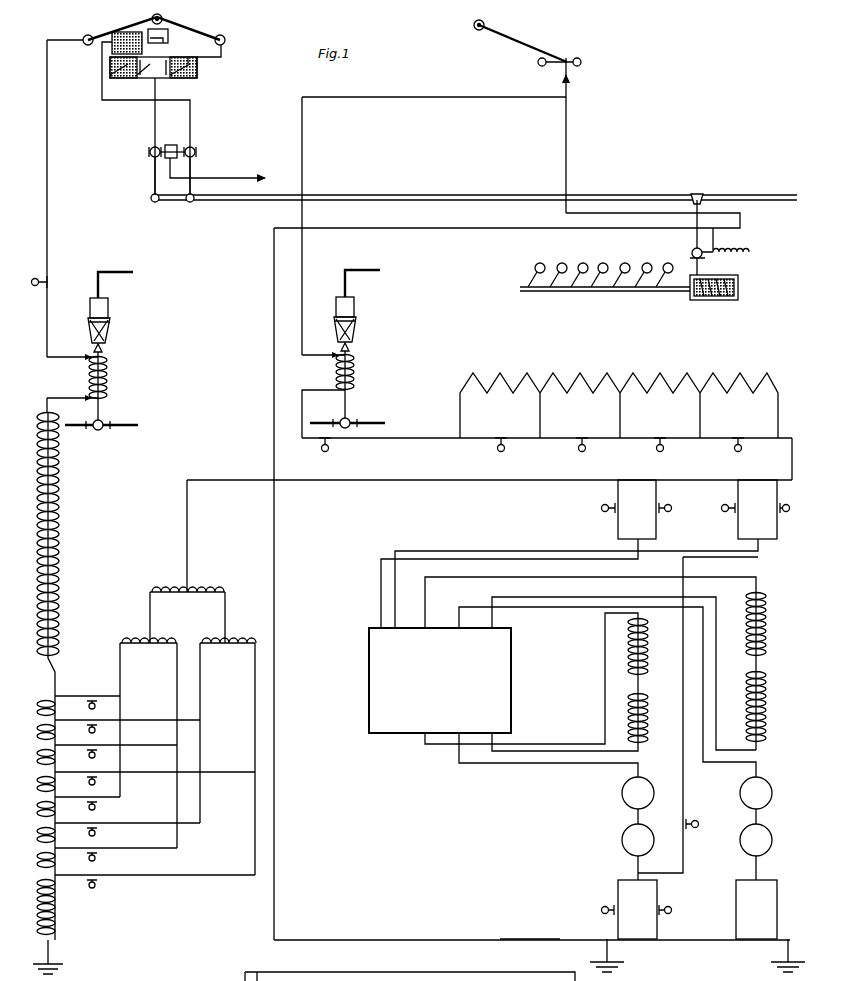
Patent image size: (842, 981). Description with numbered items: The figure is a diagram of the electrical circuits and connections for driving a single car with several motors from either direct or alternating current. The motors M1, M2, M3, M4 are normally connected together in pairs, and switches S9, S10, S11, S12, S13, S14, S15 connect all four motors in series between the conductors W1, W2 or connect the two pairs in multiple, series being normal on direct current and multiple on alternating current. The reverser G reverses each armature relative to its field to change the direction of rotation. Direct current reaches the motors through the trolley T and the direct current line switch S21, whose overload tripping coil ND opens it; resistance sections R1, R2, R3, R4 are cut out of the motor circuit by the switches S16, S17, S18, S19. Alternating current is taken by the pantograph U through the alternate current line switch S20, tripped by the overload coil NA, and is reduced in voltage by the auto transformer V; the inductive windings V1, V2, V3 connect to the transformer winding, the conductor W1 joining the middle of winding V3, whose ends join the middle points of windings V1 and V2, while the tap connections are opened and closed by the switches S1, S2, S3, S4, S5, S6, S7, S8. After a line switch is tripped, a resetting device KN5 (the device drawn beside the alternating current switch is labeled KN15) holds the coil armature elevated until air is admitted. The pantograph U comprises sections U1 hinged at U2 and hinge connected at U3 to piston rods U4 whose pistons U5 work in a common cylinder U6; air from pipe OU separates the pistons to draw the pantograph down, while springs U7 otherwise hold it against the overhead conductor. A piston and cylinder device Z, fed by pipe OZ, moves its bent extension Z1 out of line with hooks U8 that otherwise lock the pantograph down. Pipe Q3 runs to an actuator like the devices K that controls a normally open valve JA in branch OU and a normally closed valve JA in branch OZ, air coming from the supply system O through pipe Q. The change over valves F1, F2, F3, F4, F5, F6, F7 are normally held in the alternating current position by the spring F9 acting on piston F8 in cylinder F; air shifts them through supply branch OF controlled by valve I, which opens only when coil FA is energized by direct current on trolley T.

The auto transformer V is at (40, 490).
The inductive winding V1 is at (150, 648).
The inductive winding V2 is at (228, 648).
The inductive winding V3 is at (198, 588).
The tap switch S1 is at (155, 885).
The tap switch S2 is at (116, 858).
The tap switch S3 is at (127, 833).
The tap switch S4 is at (87, 807).
The tap switch S5 is at (155, 782).
The tap switch S6 is at (116, 755).
The tap switch S7 is at (127, 730).
The tap switch S8 is at (87, 706).
The motor connection switch S9 is at (601, 509).
The motor connection switch S10 is at (672, 509).
The motor connection switch S11 is at (722, 513).
The motor connection switch S12 is at (786, 513).
The motor connection switch S13 is at (600, 908).
The motor connection switch S14 is at (672, 911).
The motor connection switch S15 is at (703, 818).
The resistance switch S16 is at (732, 434).
The resistance switch S17 is at (653, 435).
The resistance switch S18 is at (575, 435).
The resistance switch S19 is at (494, 435).
The alternate current line switch S20 is at (27, 294).
The direct current line switch S21 is at (336, 449).
The pipe Q is at (383, 258).
The pipe Q3 is at (195, 176).
The valve KN15 is at (100, 306).
The resetting device KN5 is at (348, 306).
The overload tripping coil NA is at (107, 380).
The overload tripping coil ND is at (355, 375).
The pantograph U is at (102, 68).
The pantograph section U1 is at (176, 44).
The hinge U2 is at (142, 34).
The hinge connection U3 is at (255, 64).
The piston rod U4 is at (222, 82).
The piston U5 is at (258, 86).
The cylinder U6 is at (172, 78).
The spring U7 is at (85, 115).
The hook U8 is at (226, 40).
The piston and cylinder device Z is at (154, 26).
The bent piston rod extension Z1 is at (128, 92).
The pipe OZ is at (192, 130).
The pipe OU is at (153, 122).
The valve JA is at (122, 174).
The actuator device K is at (171, 145).
The supply system O is at (232, 201).
The trolley T is at (540, 52).
The supply branch OF is at (742, 222).
The coil FA is at (749, 254).
The valve I is at (703, 258).
The cylinder F is at (722, 302).
The change over valve F1 is at (670, 264).
The change over valve F2 is at (645, 264).
The change over valve F3 is at (623, 264).
The change over valve F4 is at (601, 264).
The change over valve F5 is at (581, 264).
The change over valve F6 is at (560, 264).
The change over valve F7 is at (535, 267).
The piston F8 is at (688, 298).
The spring F9 is at (738, 290).
The resistance section R1 is at (726, 378).
The resistance section R2 is at (648, 378).
The resistance section R3 is at (580, 378).
The resistance section R4 is at (500, 379).
The conductor W1 is at (487, 481).
The conductor W2 is at (517, 940).
The reverser G is at (440, 680).
The motor M1 is at (622, 795).
The motor M2 is at (622, 843).
The motor M3 is at (763, 797).
The motor M4 is at (766, 842).